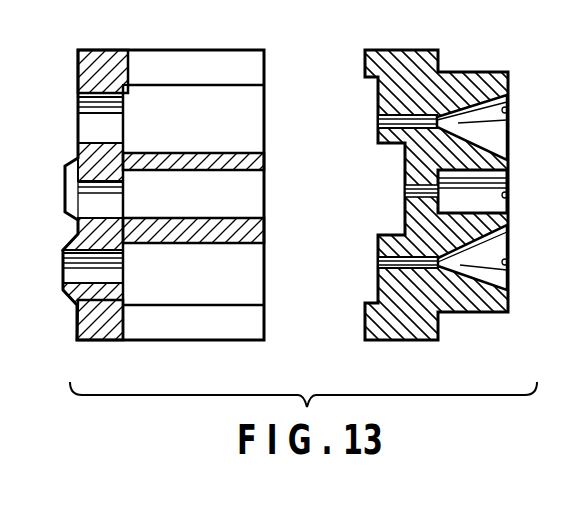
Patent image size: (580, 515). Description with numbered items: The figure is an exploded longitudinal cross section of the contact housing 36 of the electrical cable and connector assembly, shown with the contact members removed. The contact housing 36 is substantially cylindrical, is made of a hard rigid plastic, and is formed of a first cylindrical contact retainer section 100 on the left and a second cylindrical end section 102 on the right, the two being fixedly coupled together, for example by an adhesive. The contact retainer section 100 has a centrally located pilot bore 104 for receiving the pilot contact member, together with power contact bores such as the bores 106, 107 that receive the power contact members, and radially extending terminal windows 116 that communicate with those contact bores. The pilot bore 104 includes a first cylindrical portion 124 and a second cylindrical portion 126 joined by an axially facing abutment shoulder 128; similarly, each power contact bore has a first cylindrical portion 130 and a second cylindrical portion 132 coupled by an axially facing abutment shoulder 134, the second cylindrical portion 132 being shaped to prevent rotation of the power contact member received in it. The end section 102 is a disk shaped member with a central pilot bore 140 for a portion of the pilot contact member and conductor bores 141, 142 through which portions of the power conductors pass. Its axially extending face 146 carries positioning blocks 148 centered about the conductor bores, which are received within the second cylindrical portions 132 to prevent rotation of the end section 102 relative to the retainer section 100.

The contact housing 36 is at (357, 43).
The first cylindrical contact retainer section 100 is at (240, 50).
The second cylindrical end section 102 is at (461, 71).
The pilot bore 104 is at (190, 171).
The power contact bore 106 is at (185, 92).
The power contact bore 107 is at (186, 305).
The terminal window 116 is at (142, 52).
The first cylindrical portion 124 is at (120, 245).
The second cylindrical portion 126 is at (256, 220).
The axially facing abutment shoulder 128 is at (98, 200).
The first cylindrical portion 130 is at (103, 145).
The second cylindrical portion 132 is at (240, 154).
The axially facing abutment shoulder 134 is at (120, 125).
The pilot bore 140 is at (509, 194).
The conductor bore 141 is at (509, 109).
The conductor bore 142 is at (509, 262).
The axially extending face 146 is at (362, 327).
The positioning block 148 is at (365, 78).